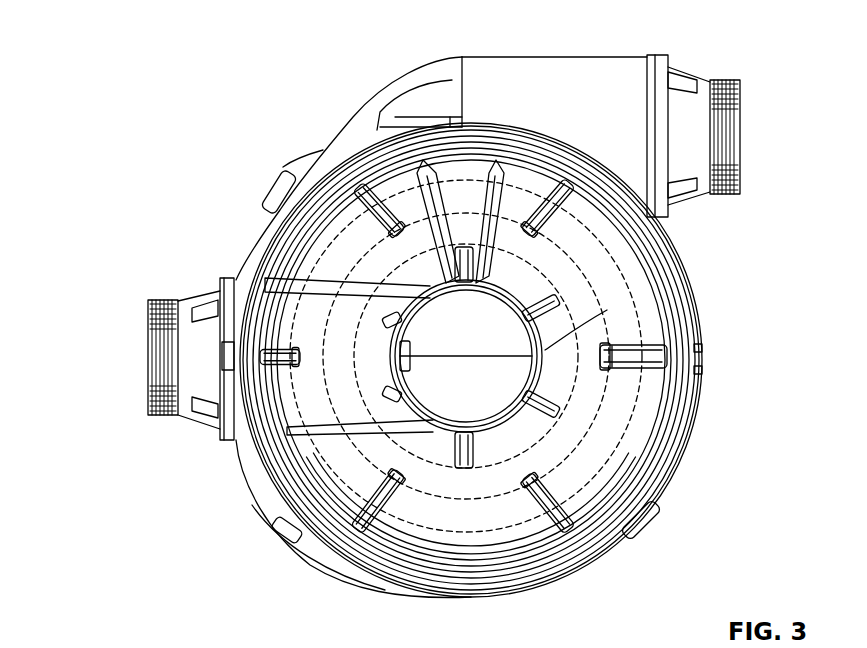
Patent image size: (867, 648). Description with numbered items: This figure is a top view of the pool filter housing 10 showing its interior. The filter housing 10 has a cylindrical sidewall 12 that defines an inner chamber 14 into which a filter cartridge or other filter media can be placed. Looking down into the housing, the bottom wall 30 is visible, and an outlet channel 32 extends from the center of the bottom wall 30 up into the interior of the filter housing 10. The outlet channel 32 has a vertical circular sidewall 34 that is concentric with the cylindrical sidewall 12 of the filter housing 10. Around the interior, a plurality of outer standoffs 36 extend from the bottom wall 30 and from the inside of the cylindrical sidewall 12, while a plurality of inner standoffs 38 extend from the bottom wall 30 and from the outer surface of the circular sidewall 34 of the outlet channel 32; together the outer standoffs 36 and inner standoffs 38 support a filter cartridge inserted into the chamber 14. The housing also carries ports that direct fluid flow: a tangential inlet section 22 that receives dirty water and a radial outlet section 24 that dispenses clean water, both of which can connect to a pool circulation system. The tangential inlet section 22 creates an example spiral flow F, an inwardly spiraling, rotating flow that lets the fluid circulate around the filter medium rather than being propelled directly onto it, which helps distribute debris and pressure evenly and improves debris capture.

The pool filter housing 10 is at (113, 72).
The cylindrical sidewall 12 is at (320, 508).
The inner chamber 14 is at (354, 464).
The tangential inlet section 22 is at (598, 55).
The outlet section 24 is at (196, 284).
The bottom wall 30 is at (645, 205).
The outlet channel 32 is at (385, 342).
The vertical circular sidewall 34 is at (550, 362).
The outer standoffs 36 is at (368, 218).
The inner standoffs 38 is at (560, 282).
The example spiral flow F is at (607, 310).